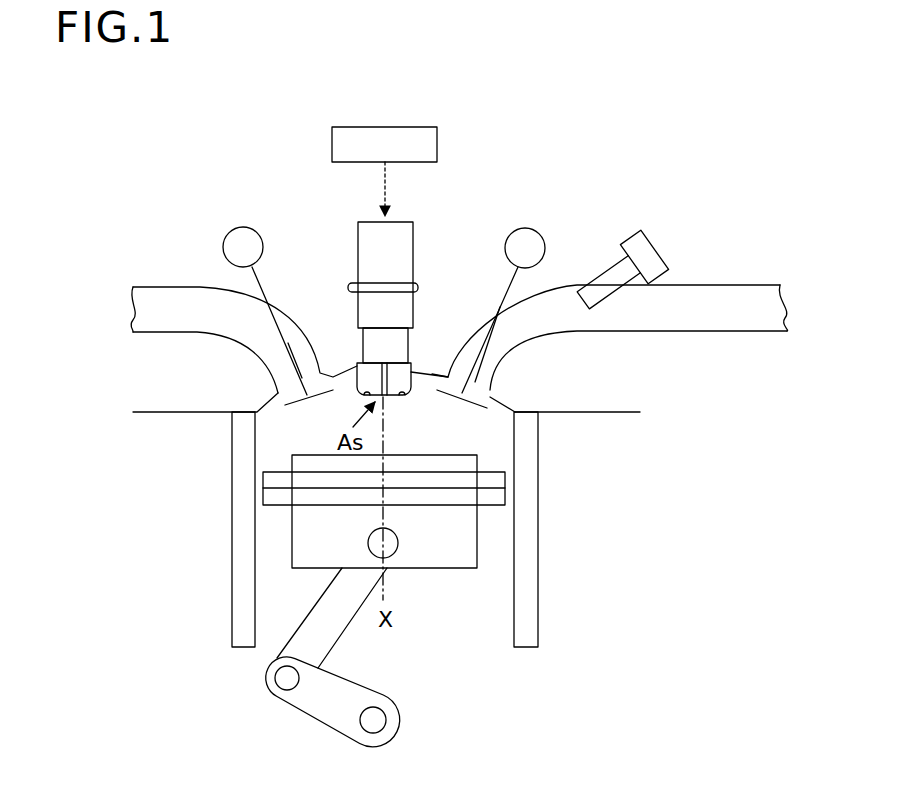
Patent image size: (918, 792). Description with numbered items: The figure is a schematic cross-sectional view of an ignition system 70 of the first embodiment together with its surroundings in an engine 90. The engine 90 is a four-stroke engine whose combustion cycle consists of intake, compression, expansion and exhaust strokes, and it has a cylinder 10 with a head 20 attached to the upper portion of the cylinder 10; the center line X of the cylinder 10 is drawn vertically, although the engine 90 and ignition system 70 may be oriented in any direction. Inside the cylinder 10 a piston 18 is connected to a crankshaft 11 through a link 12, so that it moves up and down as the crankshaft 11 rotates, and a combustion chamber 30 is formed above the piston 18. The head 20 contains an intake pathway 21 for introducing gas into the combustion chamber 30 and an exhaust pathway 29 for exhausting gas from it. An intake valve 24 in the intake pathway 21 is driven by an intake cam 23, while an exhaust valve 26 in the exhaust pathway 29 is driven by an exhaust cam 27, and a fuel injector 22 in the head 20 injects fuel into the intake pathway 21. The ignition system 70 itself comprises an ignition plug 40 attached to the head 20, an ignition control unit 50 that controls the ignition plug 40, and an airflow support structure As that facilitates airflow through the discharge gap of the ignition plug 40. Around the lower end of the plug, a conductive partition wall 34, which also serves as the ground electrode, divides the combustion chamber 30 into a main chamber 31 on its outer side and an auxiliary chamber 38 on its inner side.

The cylinder 10 is at (523, 627).
The crankshaft 11 is at (386, 708).
The link 12 is at (340, 637).
The piston 18 is at (448, 570).
The head 20 is at (580, 400).
The intake pathway 21 is at (683, 331).
The fuel injector 22 is at (626, 242).
The intake cam 23 is at (525, 228).
The intake valve 24 is at (483, 333).
The exhaust valve 26 is at (305, 338).
The exhaust cam 27 is at (263, 245).
The exhaust pathway 29 is at (160, 293).
The combustion chamber 30 is at (295, 435).
The main chamber 31 is at (483, 435).
The partition wall 34 is at (412, 380).
The auxiliary chamber 38 is at (362, 368).
The ignition plug 40 is at (413, 241).
The ignition control unit 50 is at (437, 135).
The ignition system 70 is at (352, 118).
The engine 90 is at (206, 148).